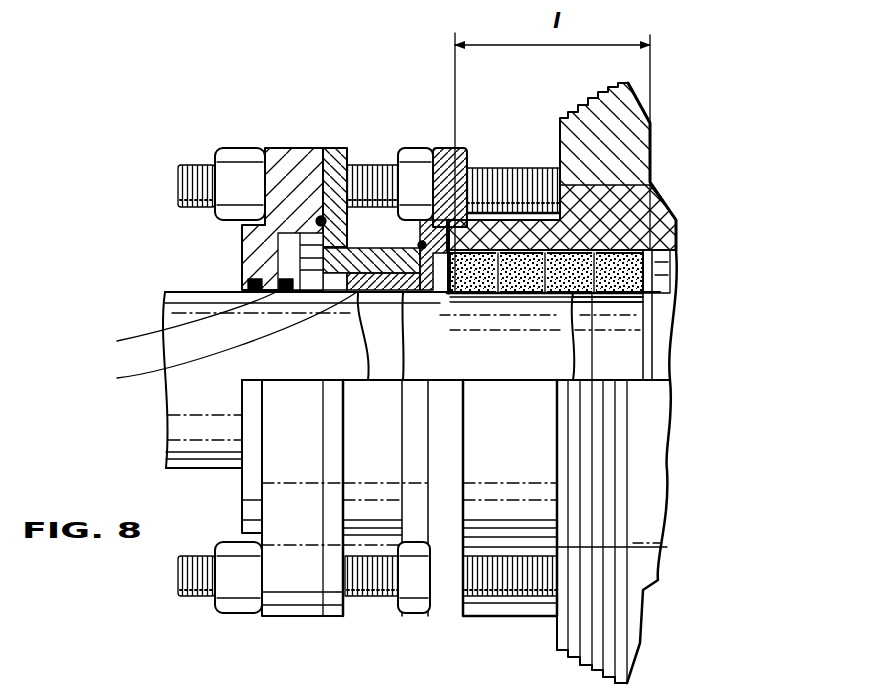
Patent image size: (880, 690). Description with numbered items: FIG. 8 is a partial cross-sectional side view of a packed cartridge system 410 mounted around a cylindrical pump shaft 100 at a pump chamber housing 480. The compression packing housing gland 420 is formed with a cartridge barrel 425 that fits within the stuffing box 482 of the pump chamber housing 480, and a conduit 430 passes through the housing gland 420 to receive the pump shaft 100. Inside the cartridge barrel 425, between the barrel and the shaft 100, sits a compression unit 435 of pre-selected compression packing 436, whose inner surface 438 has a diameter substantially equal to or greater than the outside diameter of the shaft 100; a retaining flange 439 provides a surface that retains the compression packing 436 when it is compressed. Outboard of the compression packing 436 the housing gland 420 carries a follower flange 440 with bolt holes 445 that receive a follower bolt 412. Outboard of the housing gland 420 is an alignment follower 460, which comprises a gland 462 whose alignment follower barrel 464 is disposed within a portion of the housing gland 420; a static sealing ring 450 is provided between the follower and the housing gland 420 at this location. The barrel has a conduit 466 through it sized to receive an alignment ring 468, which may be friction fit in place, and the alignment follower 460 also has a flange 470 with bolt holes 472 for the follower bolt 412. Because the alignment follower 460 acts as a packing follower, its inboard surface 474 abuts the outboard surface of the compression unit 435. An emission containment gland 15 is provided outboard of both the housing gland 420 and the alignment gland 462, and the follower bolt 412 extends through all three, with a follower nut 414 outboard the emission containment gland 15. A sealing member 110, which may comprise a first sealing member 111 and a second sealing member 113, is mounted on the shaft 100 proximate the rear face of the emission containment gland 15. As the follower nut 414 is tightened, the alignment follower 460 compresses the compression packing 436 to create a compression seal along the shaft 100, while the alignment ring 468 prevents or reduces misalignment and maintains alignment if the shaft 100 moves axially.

The pump shaft 100 is at (207, 388).
The sealing member 110 is at (270, 284).
The first sealing member 111 is at (163, 322).
The second sealing member 113 is at (200, 340).
The emission containment gland 15 is at (331, 177).
The packed cartridge system 410 is at (160, 262).
The follower bolt 412 is at (198, 163).
The follower nut 414 is at (232, 148).
The compression packing housing gland 420 is at (510, 552).
The cartridge barrel 425 is at (533, 460).
The conduit 430 is at (627, 370).
The compression unit 435 is at (532, 170).
The compression packing 436 is at (487, 246).
The inner surface 438 is at (662, 298).
The retaining flange 439 is at (645, 278).
The follower flange 440 is at (442, 158).
The bolt holes 445 is at (510, 160).
The static sealing ring 450 is at (433, 268).
The alignment follower 460 is at (331, 177).
The gland 462 is at (334, 146).
The alignment follower barrel 464 is at (370, 572).
The conduit 466 is at (387, 370).
The alignment ring 468 is at (357, 300).
The flange 470 is at (377, 160).
The bolt holes 472 is at (357, 158).
The inboard surface 474 is at (463, 295).
The pump chamber housing 480 is at (618, 158).
The stuffing box 482 is at (668, 208).